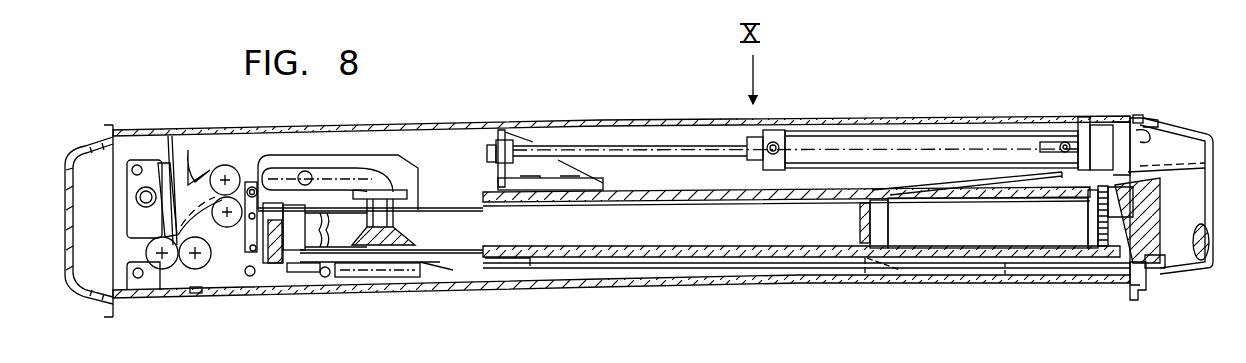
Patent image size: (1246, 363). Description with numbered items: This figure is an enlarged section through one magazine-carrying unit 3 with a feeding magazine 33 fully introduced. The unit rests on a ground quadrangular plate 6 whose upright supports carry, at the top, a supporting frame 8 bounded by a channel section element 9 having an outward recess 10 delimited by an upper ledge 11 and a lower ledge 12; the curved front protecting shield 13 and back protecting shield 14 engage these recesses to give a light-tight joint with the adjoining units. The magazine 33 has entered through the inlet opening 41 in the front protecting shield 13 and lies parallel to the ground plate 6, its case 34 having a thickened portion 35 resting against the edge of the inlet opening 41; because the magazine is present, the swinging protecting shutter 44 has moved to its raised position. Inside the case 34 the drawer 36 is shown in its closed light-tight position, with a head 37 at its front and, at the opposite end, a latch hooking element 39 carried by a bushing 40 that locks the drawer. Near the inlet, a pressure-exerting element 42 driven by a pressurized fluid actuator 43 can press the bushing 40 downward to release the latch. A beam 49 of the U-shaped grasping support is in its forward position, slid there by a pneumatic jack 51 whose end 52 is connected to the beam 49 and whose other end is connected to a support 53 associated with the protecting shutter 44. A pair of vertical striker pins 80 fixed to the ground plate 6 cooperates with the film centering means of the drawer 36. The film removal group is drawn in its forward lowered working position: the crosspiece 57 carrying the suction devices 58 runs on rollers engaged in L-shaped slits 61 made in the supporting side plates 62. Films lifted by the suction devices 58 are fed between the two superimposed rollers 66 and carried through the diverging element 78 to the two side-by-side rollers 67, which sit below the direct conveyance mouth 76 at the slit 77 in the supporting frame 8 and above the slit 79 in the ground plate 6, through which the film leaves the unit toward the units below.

The magazine-carrying unit 3 is at (905, 112).
The ground quadrangular plate 6 is at (832, 283).
The supporting frame 8 is at (1031, 116).
The channel section element 9 is at (1130, 108).
The recess 10 is at (1152, 119).
The upper ledge 11 is at (1140, 116).
The lower ledge 12 is at (1142, 141).
The front protecting shield 13 is at (1204, 141).
The back protecting shield 14 is at (68, 158).
The feeding magazine 33 is at (478, 258).
The case 34 is at (795, 128).
The thickened portion 35 is at (1145, 205).
The drawer 36 is at (433, 207).
The head 37 is at (268, 203).
The latch hooking element 39 is at (1083, 218).
The bushing 40 is at (1140, 280).
The inlet opening 41 is at (1150, 170).
The pressure-exerting element 42 is at (1160, 262).
The pressurized fluid actuator 43 is at (1102, 140).
The protecting shutter 44 is at (983, 173).
The beam 49 is at (603, 186).
The pneumatic jack 51 is at (797, 128).
The end 52 is at (505, 130).
The support 53 is at (1082, 127).
The crosspiece 57 is at (398, 188).
The suction devices 58 is at (407, 238).
The L-shaped slits 61 is at (316, 178).
The supporting side plates 62 is at (340, 158).
The superimposed rollers 66 is at (230, 200).
The side-by-side rollers 67 is at (190, 270).
The direct conveyance mouth 76 is at (166, 168).
The slit 77 is at (176, 160).
The diverging element 78 is at (187, 155).
The slit 79 is at (200, 293).
The vertical striker pins 80 is at (278, 264).